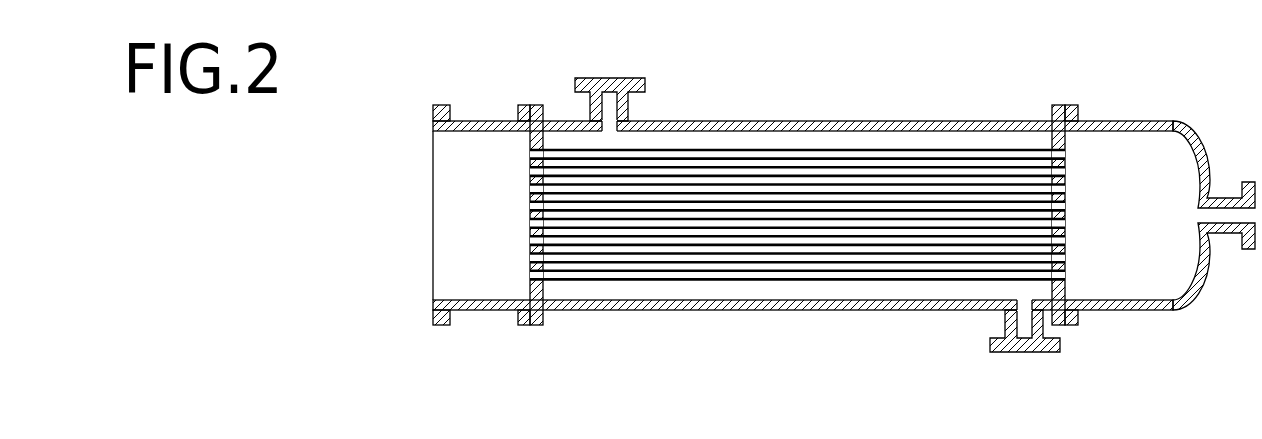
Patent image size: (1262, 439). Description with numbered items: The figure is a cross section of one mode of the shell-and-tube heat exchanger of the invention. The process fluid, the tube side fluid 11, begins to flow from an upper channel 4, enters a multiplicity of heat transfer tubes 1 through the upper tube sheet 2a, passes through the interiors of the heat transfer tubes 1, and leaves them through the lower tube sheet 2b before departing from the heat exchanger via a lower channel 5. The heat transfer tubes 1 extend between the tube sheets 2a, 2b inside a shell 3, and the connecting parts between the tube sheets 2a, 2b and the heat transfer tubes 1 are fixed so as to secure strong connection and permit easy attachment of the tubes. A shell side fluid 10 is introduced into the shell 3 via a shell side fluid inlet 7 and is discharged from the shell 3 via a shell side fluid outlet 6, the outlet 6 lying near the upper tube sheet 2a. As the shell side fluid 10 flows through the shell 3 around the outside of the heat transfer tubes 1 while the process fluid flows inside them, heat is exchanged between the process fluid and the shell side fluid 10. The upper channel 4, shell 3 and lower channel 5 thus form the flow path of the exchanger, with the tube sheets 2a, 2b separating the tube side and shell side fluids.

The heat transfer tubes 1 is at (893, 152).
The upper tube sheet 2a is at (538, 107).
The lower tube sheet 2b is at (1060, 108).
The shell 3 is at (775, 127).
The upper channel 4 is at (487, 310).
The lower channel 5 is at (1128, 125).
The shell side fluid outlet 6 is at (608, 88).
The shell side fluid inlet 7 is at (1027, 338).
The shell side fluid 10 is at (717, 147).
The tube side fluid 11 is at (488, 147).